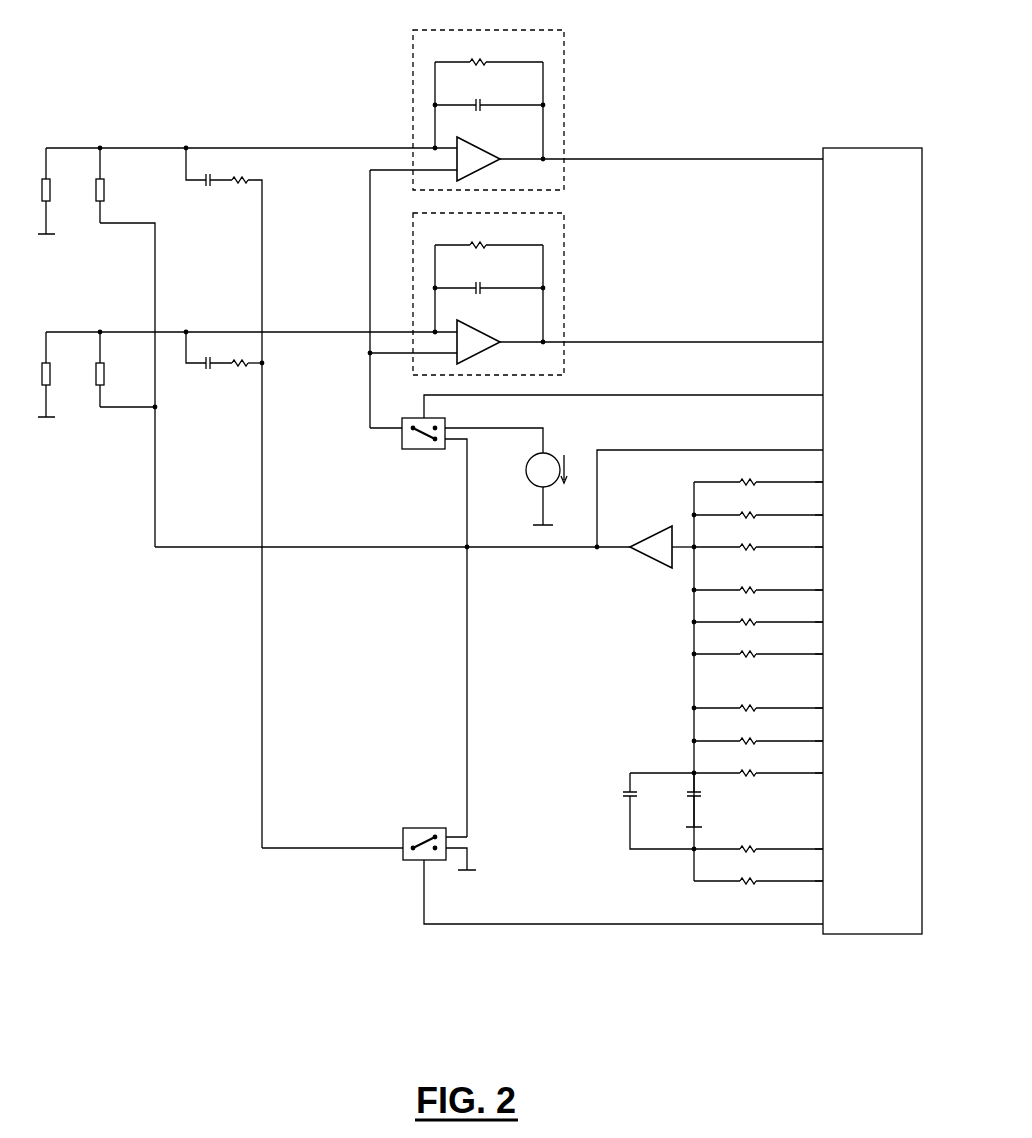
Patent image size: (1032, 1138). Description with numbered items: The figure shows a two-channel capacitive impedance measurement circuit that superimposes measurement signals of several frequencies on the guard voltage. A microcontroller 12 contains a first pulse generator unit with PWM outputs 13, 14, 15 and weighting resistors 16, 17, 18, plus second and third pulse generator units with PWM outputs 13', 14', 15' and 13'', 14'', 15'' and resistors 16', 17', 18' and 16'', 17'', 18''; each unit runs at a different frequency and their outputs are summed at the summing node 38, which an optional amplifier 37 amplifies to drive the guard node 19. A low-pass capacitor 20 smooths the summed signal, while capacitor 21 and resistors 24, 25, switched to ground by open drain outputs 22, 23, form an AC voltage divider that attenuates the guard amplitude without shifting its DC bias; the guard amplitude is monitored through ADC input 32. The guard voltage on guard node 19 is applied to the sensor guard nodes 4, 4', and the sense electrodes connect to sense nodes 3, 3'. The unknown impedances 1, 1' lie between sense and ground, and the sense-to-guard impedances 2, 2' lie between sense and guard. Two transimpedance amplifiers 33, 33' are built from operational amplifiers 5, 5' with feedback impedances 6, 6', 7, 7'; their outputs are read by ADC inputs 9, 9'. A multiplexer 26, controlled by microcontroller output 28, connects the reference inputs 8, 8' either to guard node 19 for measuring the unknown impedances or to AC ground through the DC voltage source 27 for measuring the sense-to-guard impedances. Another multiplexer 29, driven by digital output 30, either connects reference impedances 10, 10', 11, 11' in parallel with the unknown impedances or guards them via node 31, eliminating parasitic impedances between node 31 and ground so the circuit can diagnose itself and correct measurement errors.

The unknown impedance 1 is at (40, 191).
The sense-to-guard impedance 2 is at (92, 185).
The sense node 3 is at (251, 139).
The guard node 4 is at (127, 376).
The operational amplifier 5 is at (478, 153).
The feedback impedance 6 is at (489, 97).
The feedback impedance 7 is at (489, 53).
The transimpedance amplifier reference input 8 is at (413, 299).
The ADC input 9 is at (661, 150).
The reference impedance 10 is at (209, 167).
The reference impedance 11 is at (246, 500).
The microcontroller 12 is at (872, 531).
The PWM output 13 is at (809, 472).
The PWM output 14 is at (809, 505).
The PWM output 15 is at (809, 537).
The weighting resistor 16 is at (758, 473).
The weighting resistor 17 is at (758, 506).
The weighting resistor 18 is at (758, 538).
The guard node 19 is at (392, 538).
The capacitor 20 is at (681, 800).
The capacitor 21 is at (645, 811).
The open drain output 22 is at (809, 841).
The open drain output 23 is at (809, 873).
The resistor 24 is at (758, 840).
The resistor 25 is at (758, 872).
The multiplexer 26 is at (418, 618).
The DC voltage source 27 is at (506, 476).
The microcontroller output 28 is at (623, 397).
The multiplexer 29 is at (439, 839).
The digital output 30 is at (623, 892).
The node 31 is at (332, 838).
The ADC input 32 is at (710, 488).
The transimpedance amplifier 33 is at (488, 100).
The amplifier 37 is at (658, 540).
The summing node 38 is at (699, 672).
The unknown impedance 1' is at (39, 374).
The sense-to-guard impedance 2' is at (91, 369).
The sense node 3' is at (251, 323).
The guard node 4' is at (128, 399).
The operational amplifier 5' is at (478, 336).
The feedback impedance 6' is at (489, 279).
The feedback impedance 7' is at (489, 236).
The transimpedance amplifier reference input 8' is at (412, 363).
The ADC input 9' is at (661, 333).
The reference impedance 10' is at (209, 350).
The reference impedance 11' is at (246, 351).
The transimpedance amplifier 33' is at (488, 284).
The PWM output 13' is at (807, 580).
The PWM output 14' is at (807, 612).
The PWM output 15' is at (807, 644).
The resistor 16' is at (758, 581).
The resistor 17' is at (758, 613).
The resistor 18' is at (758, 646).
The PWM output 13'' is at (806, 698).
The PWM output 14'' is at (806, 731).
The PWM output 15'' is at (806, 763).
The resistor 16'' is at (758, 699).
The resistor 17'' is at (758, 732).
The resistor 18'' is at (758, 764).